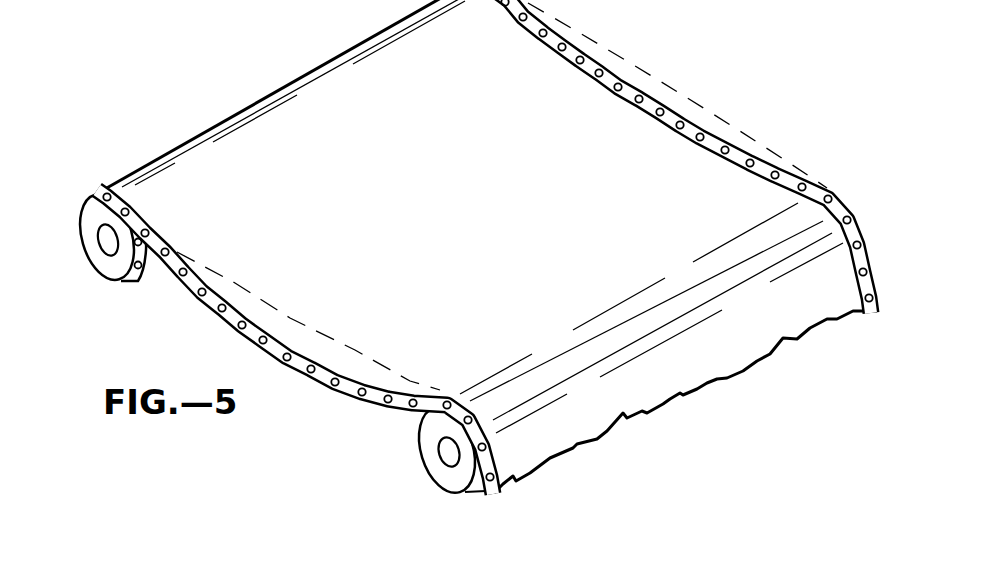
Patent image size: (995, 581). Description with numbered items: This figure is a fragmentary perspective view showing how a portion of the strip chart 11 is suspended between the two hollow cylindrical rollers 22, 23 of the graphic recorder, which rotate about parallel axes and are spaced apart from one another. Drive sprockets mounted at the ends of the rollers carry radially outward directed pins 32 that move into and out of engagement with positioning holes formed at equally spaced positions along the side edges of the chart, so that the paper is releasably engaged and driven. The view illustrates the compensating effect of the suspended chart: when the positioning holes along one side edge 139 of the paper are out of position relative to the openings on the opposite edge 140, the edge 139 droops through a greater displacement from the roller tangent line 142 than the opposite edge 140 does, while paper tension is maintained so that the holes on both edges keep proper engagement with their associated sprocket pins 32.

The strip chart 11 is at (63, 243).
The roller 22 is at (425, 459).
The roller 23 is at (112, 268).
The pin 32 is at (140, 267).
The side edge 139 is at (250, 339).
The opposite edge 140 is at (629, 84).
The roller tangent line 142 is at (303, 323).